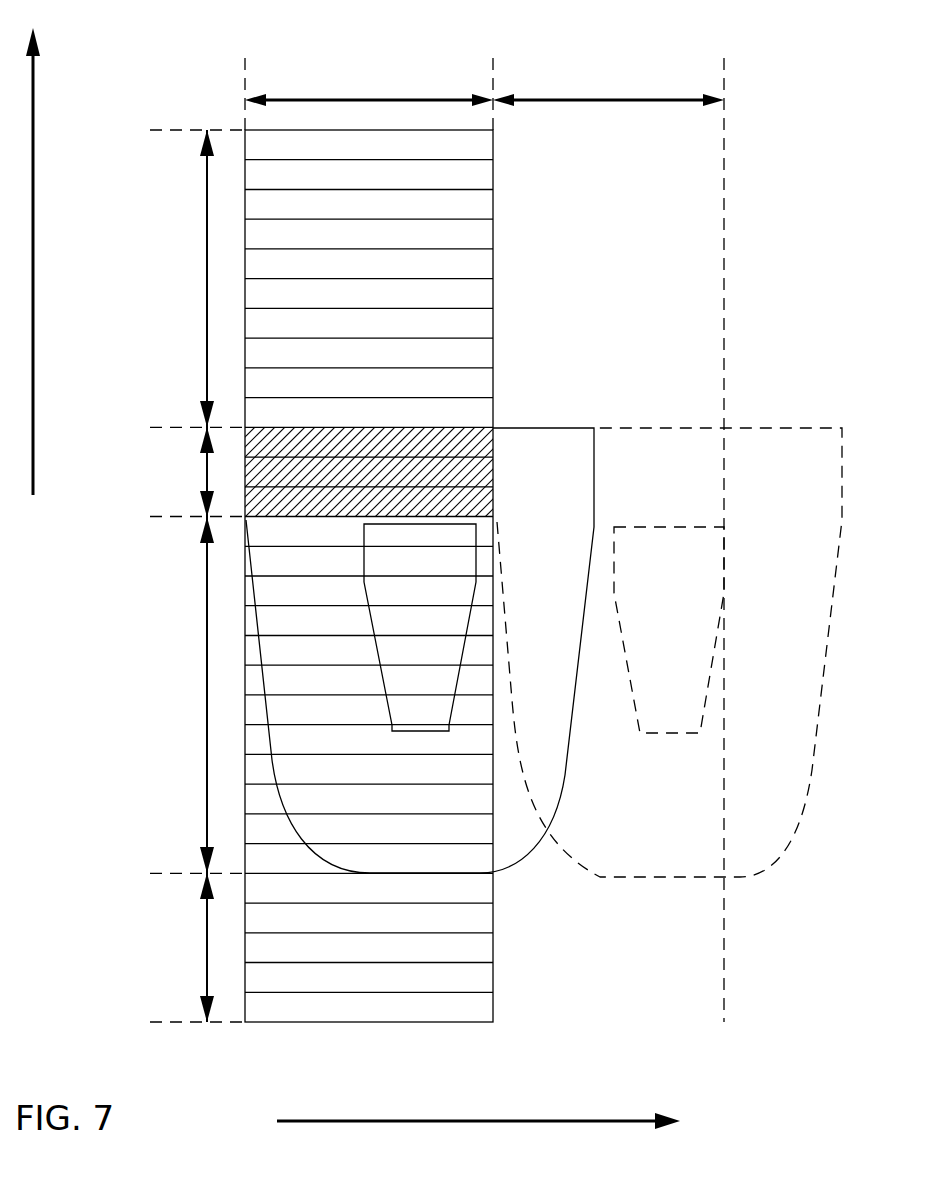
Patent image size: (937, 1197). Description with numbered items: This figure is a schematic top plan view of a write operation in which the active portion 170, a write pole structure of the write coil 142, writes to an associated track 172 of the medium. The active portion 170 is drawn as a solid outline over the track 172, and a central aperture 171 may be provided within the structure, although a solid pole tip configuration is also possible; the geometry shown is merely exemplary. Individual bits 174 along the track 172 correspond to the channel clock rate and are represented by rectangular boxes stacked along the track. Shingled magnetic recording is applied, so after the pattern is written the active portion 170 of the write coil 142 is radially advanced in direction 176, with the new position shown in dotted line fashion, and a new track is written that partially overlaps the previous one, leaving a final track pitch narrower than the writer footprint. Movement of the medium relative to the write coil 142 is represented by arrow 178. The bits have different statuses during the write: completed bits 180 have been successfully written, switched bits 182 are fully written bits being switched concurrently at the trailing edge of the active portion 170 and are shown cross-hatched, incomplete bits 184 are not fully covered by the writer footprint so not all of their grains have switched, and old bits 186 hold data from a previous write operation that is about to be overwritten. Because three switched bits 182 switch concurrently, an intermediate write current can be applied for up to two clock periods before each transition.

The write coil 142 is at (770, 385).
The active portion 170 is at (557, 427).
The central aperture 171 is at (615, 597).
The track 172 is at (345, 40).
The bits 174 is at (485, 232).
The direction 176 is at (603, 1120).
The arrow 178 is at (36, 135).
The completed bits 180 is at (205, 333).
The switched bits 182 is at (205, 487).
The incomplete bits 184 is at (205, 770).
The old bits 186 is at (205, 970).